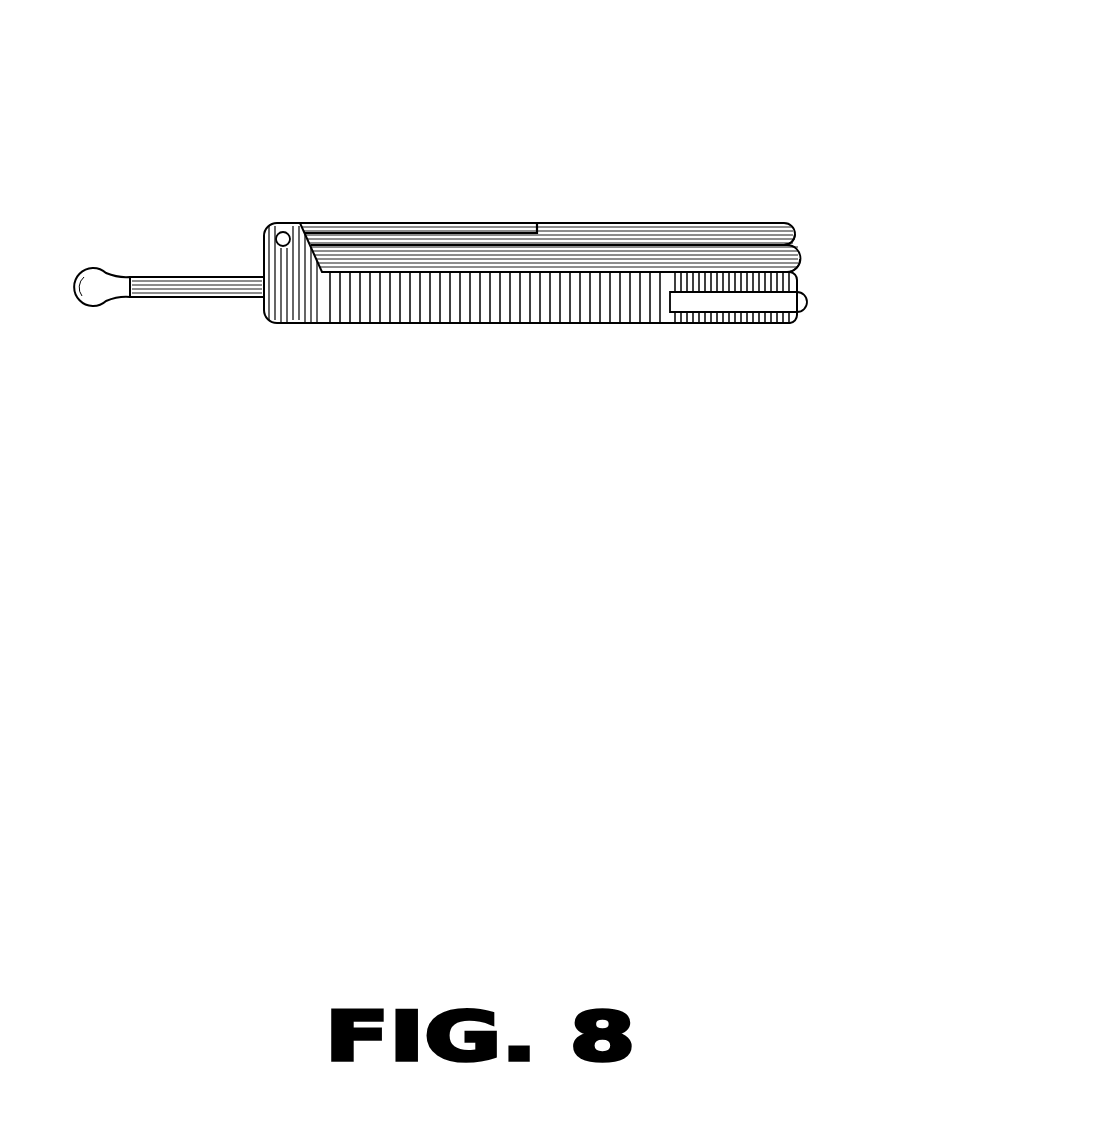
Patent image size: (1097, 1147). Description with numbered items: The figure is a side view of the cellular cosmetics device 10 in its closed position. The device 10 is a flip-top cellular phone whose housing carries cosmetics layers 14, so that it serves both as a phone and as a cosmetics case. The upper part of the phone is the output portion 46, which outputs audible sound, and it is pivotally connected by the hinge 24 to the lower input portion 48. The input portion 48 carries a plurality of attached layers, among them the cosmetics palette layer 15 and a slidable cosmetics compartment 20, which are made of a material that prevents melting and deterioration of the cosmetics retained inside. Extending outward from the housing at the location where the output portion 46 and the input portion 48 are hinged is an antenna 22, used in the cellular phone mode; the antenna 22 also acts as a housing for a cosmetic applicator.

The cellular cosmetics device 10 is at (365, 168).
The cosmetics layers 14 is at (803, 288).
The cosmetics palette layer 15 is at (562, 273).
The slidable cosmetics compartment 20 is at (740, 302).
The antenna 22 is at (98, 266).
The hinge 24 is at (288, 245).
The output portion 46 is at (712, 223).
The input portion 48 is at (800, 318).